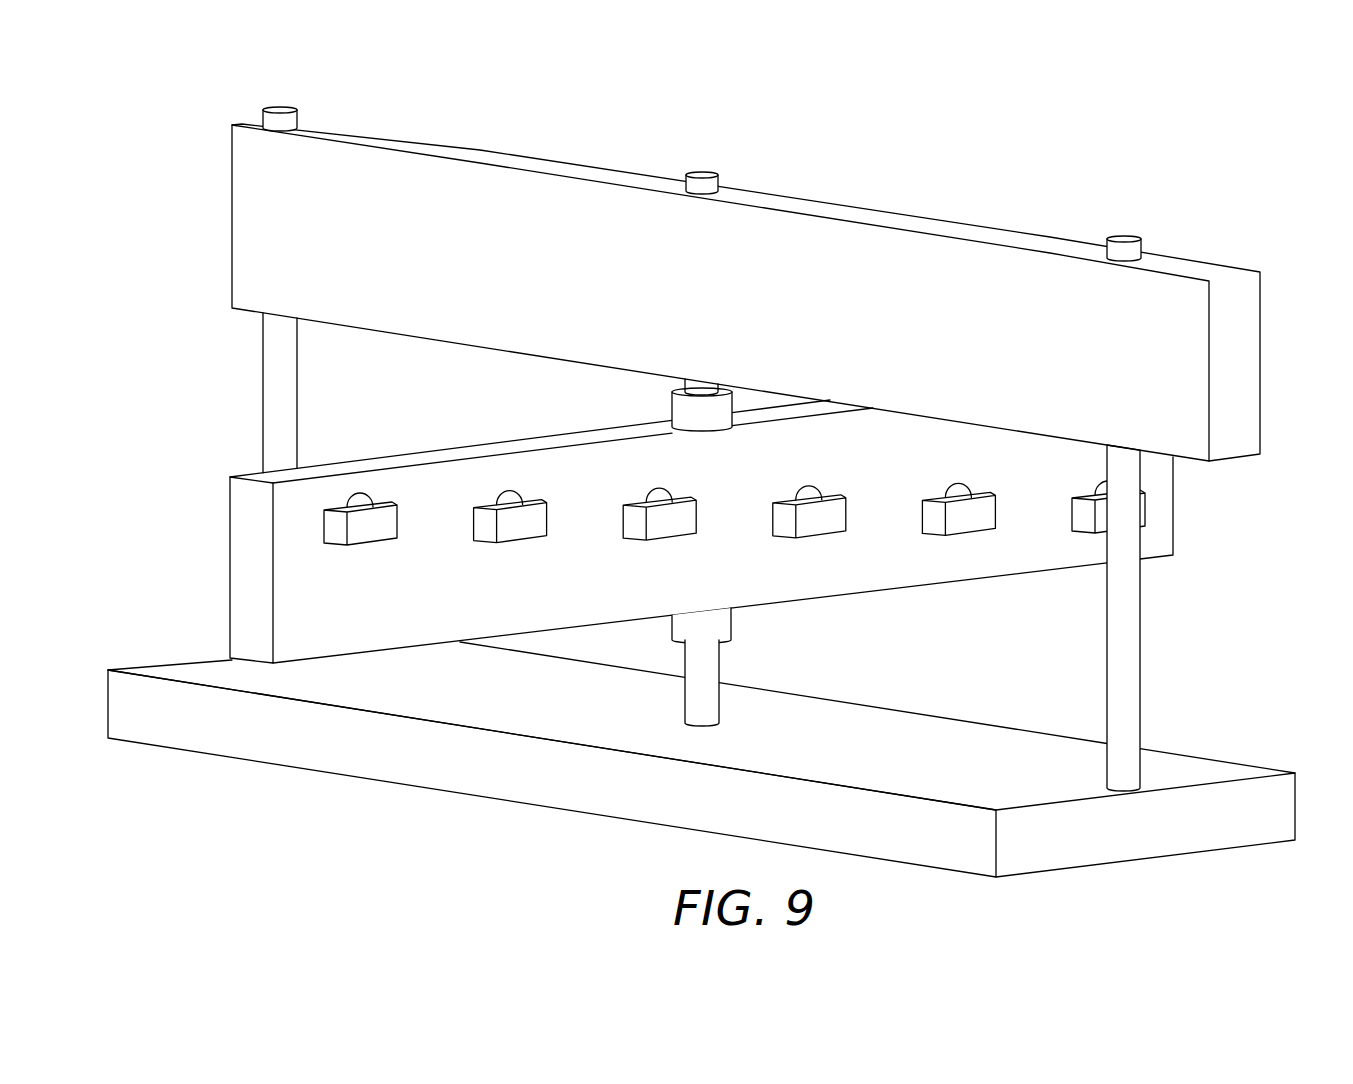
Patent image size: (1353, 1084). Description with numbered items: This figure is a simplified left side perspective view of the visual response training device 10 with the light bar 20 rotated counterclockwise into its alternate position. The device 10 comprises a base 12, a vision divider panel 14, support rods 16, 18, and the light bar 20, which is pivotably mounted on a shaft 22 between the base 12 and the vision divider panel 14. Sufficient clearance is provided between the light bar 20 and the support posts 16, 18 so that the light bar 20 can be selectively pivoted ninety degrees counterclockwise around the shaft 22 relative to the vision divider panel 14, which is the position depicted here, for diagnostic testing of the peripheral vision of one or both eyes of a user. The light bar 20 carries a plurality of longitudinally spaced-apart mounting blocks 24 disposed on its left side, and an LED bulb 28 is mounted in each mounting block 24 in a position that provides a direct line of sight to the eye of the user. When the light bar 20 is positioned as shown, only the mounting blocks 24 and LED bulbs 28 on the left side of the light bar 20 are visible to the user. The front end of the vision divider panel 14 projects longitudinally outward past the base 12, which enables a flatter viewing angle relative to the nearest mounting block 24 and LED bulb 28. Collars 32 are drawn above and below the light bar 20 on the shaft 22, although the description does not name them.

The visual response training device 10 is at (1063, 132).
The base 12 is at (273, 743).
The vision divider panel 14 is at (253, 172).
The support rod 16 is at (273, 345).
The support rod 18 is at (1132, 627).
The light bar 20 is at (245, 595).
The shaft 22 is at (705, 703).
The mounting block 24 is at (335, 530).
The LED bulb 28 is at (358, 500).
The collar 32 is at (682, 414).